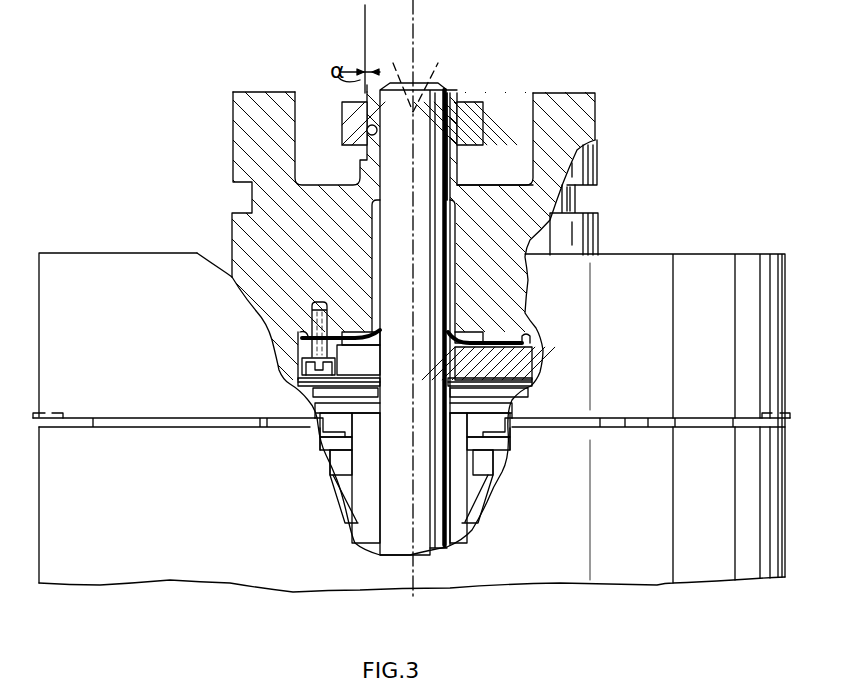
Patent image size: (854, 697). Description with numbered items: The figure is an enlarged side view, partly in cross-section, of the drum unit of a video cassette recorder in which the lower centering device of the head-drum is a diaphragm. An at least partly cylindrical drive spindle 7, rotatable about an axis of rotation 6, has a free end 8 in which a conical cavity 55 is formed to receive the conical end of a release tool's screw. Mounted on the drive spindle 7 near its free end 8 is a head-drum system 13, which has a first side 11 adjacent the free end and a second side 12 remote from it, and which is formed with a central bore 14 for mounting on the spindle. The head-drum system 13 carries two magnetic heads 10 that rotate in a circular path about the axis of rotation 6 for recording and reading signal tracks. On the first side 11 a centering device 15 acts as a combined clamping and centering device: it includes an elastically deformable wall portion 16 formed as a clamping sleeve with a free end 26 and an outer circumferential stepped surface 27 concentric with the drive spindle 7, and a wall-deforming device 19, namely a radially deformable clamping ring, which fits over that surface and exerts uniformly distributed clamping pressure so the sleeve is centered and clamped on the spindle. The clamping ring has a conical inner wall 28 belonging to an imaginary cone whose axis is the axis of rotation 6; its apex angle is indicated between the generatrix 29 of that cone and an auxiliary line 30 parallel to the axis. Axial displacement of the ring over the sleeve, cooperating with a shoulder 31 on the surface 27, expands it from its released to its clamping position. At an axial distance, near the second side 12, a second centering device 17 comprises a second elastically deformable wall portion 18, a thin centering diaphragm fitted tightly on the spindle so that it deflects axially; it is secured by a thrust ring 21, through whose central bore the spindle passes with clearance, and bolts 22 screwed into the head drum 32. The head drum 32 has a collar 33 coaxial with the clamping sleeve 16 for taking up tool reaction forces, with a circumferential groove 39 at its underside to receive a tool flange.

The axis of rotation 6 is at (417, 45).
The drive spindle 7 is at (422, 318).
The free end 8 is at (434, 98).
The magnetic heads 10 is at (48, 415).
The first side 11 is at (567, 93).
The second side 12 is at (707, 420).
The head-drum system 13 is at (151, 242).
The central bore 14 is at (452, 270).
The centering device 15 is at (503, 106).
The elastically deformable wall portion 16 is at (455, 162).
The second centering device 17 is at (285, 364).
The second elastically deformable wall portion 18 is at (354, 332).
The wall-deforming device 19 is at (480, 105).
The thrust ring 21 is at (518, 365).
The bolts 22 is at (320, 324).
The free end 26 is at (450, 88).
The outer circumferential stepped surface 27 is at (367, 155).
The conical inner wall 28 is at (468, 108).
The generatrix 29 is at (363, 63).
The auxiliary line 30 is at (367, 80).
The shoulder 31 is at (367, 128).
The head drum 32 is at (749, 265).
The collar 33 is at (578, 167).
The circumferential groove 39 is at (582, 200).
The conical cavity 55 is at (408, 77).